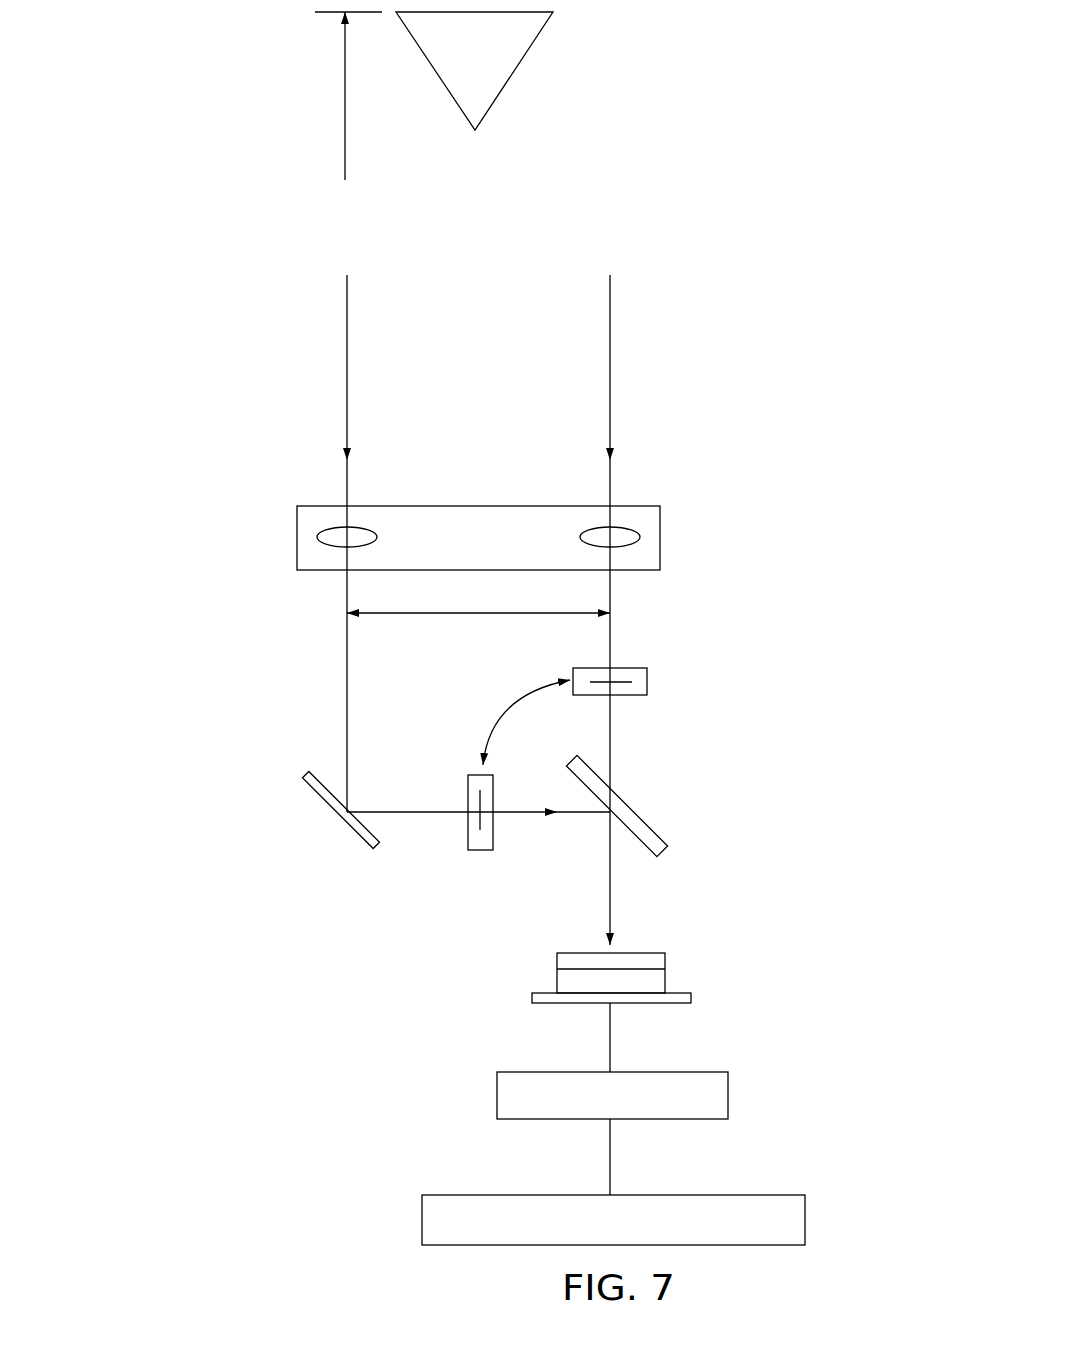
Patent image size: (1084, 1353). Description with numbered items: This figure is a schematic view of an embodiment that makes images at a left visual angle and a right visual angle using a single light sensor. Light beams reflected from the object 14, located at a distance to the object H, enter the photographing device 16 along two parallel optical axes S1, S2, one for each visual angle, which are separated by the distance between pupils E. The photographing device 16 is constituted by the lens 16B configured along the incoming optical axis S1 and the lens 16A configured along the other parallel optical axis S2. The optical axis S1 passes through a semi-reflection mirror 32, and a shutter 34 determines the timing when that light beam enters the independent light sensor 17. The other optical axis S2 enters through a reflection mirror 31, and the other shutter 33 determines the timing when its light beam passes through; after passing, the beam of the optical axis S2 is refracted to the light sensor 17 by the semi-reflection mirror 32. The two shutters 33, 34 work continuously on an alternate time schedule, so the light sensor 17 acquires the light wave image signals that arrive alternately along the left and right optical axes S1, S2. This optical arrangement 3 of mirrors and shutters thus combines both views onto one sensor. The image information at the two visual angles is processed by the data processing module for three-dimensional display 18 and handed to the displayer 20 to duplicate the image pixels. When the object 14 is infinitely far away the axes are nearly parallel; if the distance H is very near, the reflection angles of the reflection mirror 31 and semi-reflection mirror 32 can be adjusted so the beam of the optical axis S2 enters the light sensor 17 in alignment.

The object 14 is at (505, 47).
The photographing device 16 is at (660, 530).
The lens 16A is at (327, 527).
The lens 16B is at (622, 522).
The optical combining assembly 3 is at (703, 713).
The reflection mirror 31 is at (328, 805).
The semi-reflection mirror 32 is at (632, 810).
The shutter 33 is at (472, 833).
The shutter 34 is at (622, 675).
The light sensor 17 is at (642, 962).
The data processing module for three-dimensional display 18 is at (512, 1095).
The displayer 20 is at (437, 1230).
The optical axis S1 is at (610, 330).
The optical axis S2 is at (347, 330).
The distance to the object H is at (348, 96).
The distance between pupils E is at (478, 600).